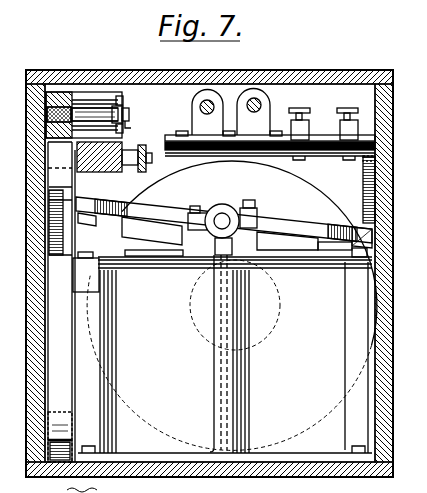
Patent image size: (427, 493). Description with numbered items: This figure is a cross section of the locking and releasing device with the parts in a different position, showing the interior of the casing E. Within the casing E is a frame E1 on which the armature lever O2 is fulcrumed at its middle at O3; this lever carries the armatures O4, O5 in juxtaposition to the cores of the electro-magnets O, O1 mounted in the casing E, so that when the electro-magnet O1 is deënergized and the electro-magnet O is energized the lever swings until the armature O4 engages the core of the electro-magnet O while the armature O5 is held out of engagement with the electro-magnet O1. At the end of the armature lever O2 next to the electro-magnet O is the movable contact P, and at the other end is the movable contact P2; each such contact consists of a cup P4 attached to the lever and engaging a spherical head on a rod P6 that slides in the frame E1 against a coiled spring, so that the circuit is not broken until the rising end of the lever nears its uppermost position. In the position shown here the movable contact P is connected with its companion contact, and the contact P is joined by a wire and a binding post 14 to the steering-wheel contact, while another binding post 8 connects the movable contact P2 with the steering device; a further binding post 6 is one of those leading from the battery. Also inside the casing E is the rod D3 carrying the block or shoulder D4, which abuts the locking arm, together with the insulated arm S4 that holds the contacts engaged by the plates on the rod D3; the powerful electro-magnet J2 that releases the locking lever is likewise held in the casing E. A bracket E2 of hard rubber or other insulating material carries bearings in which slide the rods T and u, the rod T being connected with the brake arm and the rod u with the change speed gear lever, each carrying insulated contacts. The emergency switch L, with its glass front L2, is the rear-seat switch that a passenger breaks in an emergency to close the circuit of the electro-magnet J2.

The casing E is at (357, 75).
The block or shoulder D4 is at (58, 95).
The rod D3 is at (105, 93).
The insulated arm S4 is at (126, 124).
The emergency switch L is at (58, 338).
The rod P6 is at (76, 248).
The glass front L2 is at (46, 424).
The rod T is at (192, 107).
The rod u is at (255, 100).
The bracket E2 is at (167, 143).
The binding post 14 is at (299, 111).
The binding post 8 is at (353, 105).
The electro-magnet J2 is at (317, 194).
The armature lever O2 is at (176, 218).
The armature O5 is at (152, 226).
The armature O4 is at (281, 244).
The fulcrum O3 is at (223, 220).
The movable contact P is at (352, 247).
The cup P4 is at (118, 213).
The movable contact P2 is at (94, 260).
The frame E1 is at (218, 295).
The electro-magnet O1 is at (216, 327).
The electro-magnet O is at (289, 383).
The binding post 6 is at (344, 7).